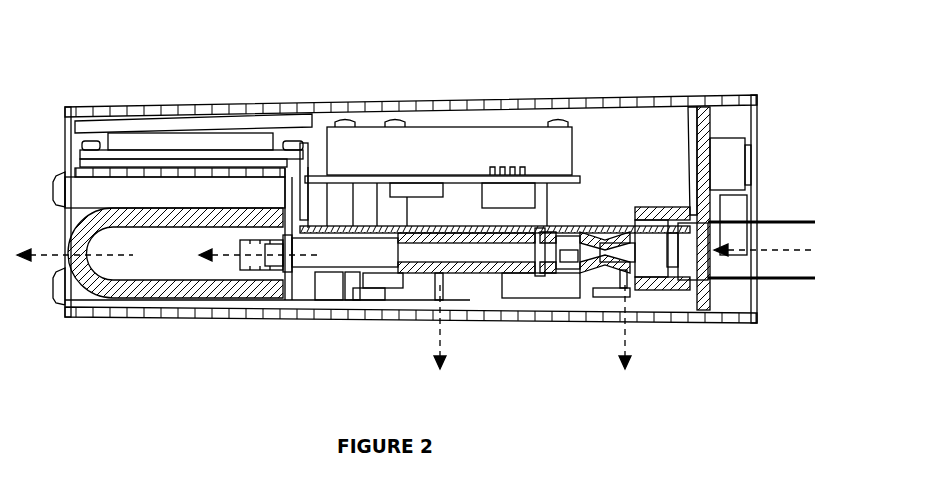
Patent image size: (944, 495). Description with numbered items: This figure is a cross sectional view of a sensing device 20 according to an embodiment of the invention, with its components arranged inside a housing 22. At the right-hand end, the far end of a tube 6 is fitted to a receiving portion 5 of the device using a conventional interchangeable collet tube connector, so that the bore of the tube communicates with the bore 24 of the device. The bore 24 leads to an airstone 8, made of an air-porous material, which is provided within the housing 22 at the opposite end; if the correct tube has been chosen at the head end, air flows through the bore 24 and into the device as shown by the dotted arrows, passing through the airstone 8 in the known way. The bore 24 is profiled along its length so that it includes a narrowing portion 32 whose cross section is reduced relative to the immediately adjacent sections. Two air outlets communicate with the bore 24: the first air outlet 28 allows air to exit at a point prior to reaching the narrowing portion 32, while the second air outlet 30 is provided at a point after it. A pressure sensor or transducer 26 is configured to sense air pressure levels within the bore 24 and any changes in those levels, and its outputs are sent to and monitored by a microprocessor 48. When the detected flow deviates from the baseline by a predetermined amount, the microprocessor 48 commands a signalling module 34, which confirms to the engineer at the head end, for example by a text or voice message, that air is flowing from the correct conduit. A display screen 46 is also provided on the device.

The sensing device 20 is at (405, 181).
The housing 22 is at (346, 100).
The display screen 46 is at (197, 132).
The microprocessor 48 is at (418, 192).
The signalling module 34 is at (440, 173).
The pressure sensor or transducer 26 is at (508, 195).
The bore 24 is at (474, 251).
The airstone 8 is at (127, 300).
The second air outlet 30 is at (445, 290).
The narrowing portion 32 is at (578, 258).
The first air outlet 28 is at (623, 283).
The receiving portion 5 is at (688, 295).
The tube 6 is at (807, 222).